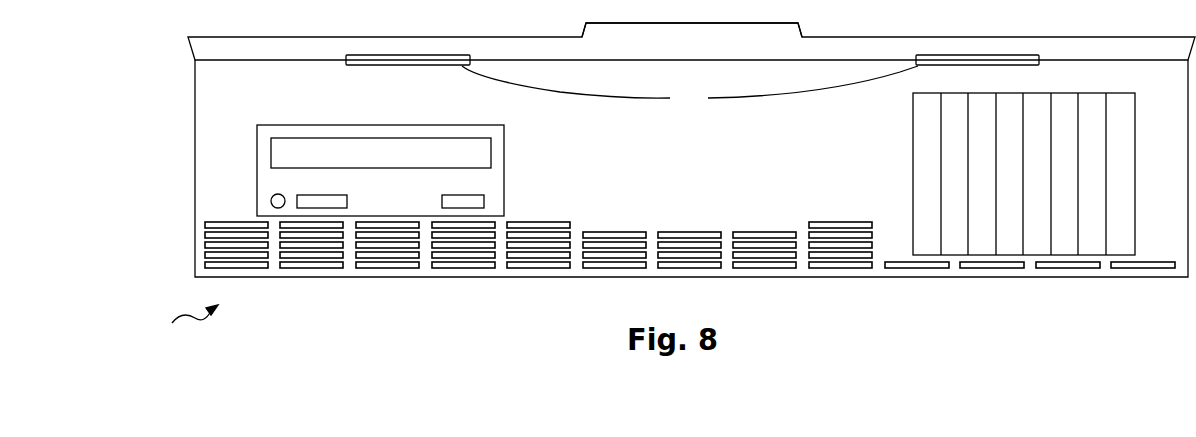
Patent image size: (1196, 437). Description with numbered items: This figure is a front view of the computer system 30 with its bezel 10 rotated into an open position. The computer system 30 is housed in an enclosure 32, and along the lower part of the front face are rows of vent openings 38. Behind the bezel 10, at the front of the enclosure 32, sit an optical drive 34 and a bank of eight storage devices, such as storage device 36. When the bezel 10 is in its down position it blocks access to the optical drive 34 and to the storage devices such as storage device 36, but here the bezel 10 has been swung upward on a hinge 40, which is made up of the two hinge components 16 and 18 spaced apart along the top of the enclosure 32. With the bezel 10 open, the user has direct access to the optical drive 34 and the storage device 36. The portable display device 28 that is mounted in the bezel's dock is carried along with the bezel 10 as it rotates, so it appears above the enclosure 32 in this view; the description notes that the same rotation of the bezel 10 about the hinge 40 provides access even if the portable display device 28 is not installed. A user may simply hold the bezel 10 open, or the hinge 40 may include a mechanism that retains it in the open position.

The bezel 10 is at (202, 46).
The hinge component 16 is at (405, 58).
The hinge component 18 is at (985, 60).
The portable display device 28 is at (801, 30).
The computer system 30 is at (183, 326).
The enclosure 32 is at (351, 277).
The optical drive 34 is at (267, 188).
The storage device 36 is at (1037, 242).
The vent openings 38 is at (545, 268).
The hinge 40 is at (690, 87).